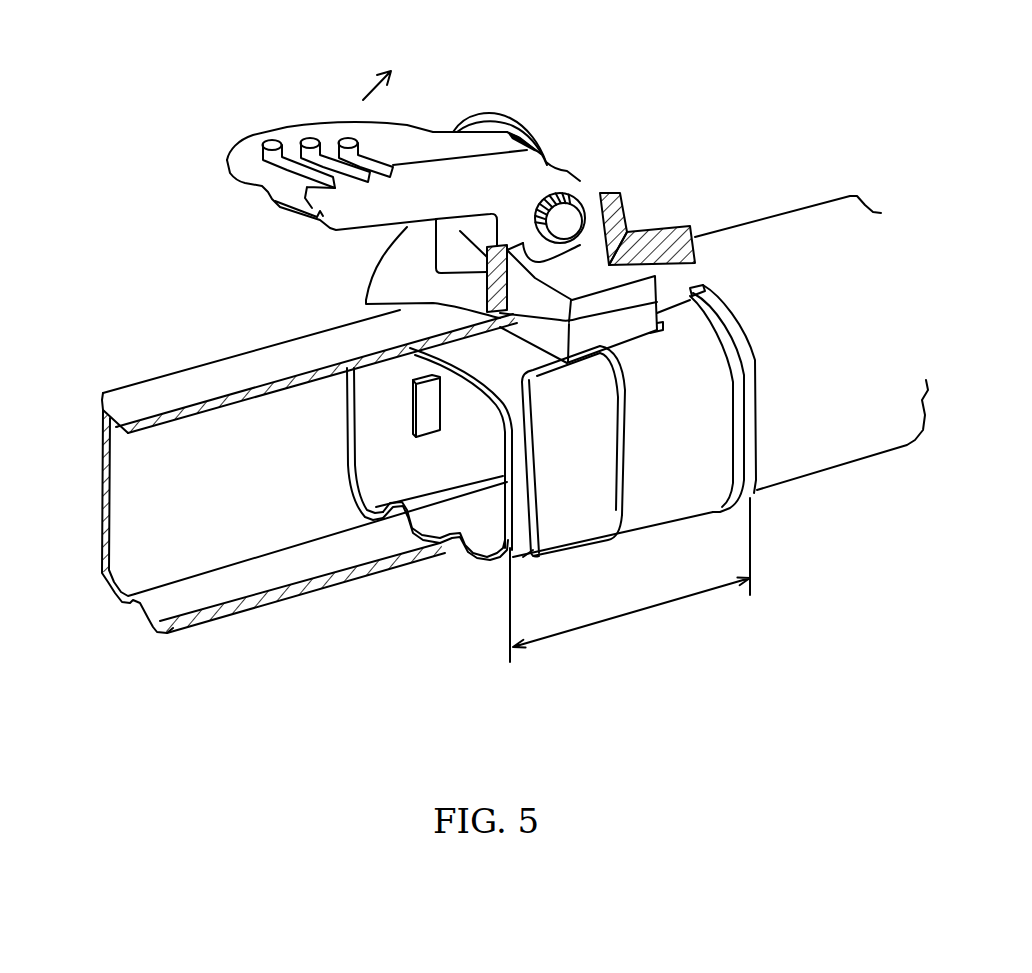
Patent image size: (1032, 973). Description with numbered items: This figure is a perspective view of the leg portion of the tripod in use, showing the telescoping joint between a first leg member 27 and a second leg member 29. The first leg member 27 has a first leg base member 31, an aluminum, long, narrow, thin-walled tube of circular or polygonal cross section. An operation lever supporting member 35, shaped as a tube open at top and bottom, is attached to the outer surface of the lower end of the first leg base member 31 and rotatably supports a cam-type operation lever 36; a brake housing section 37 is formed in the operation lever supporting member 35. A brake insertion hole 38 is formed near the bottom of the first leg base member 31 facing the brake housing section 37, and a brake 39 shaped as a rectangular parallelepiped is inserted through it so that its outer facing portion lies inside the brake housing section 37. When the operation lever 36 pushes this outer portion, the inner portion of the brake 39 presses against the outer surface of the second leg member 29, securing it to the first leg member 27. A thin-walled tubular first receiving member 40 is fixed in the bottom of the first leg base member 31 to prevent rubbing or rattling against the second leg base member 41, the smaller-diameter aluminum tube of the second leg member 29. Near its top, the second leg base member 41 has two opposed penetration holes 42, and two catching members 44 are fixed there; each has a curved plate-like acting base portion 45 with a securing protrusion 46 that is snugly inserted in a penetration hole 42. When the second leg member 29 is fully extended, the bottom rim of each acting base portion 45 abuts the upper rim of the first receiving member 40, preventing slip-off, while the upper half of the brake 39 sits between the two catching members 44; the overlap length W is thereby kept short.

The first leg member 27 is at (158, 358).
The second leg member 29 is at (790, 518).
The first leg base member 31 is at (198, 380).
The operation lever supporting member 35 is at (716, 202).
The operation lever 36 is at (247, 153).
The brake housing section 37 is at (473, 297).
The brake insertion hole 38 is at (522, 312).
The brake 39 is at (585, 268).
The first receiving member 40 is at (660, 480).
The second leg base member 41 is at (517, 482).
The penetration hole 42 is at (410, 402).
The catching member 44 is at (573, 487).
The acting base portion 45 is at (557, 528).
The securing protrusion 46 is at (428, 398).